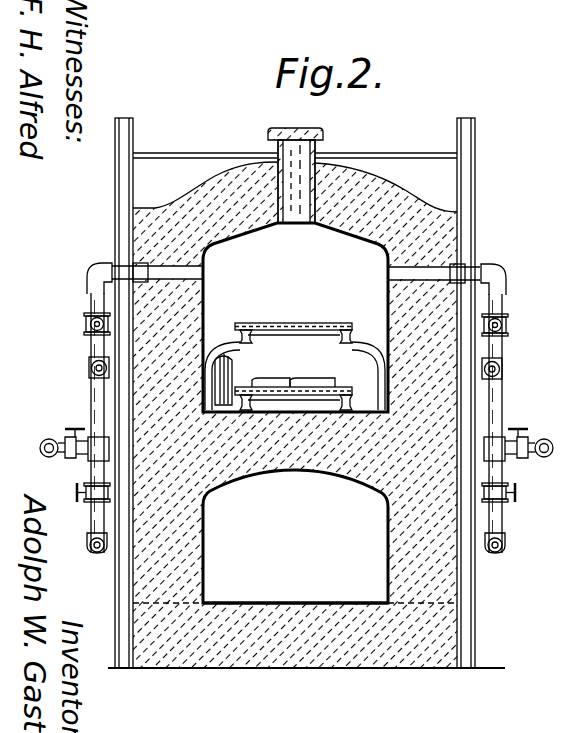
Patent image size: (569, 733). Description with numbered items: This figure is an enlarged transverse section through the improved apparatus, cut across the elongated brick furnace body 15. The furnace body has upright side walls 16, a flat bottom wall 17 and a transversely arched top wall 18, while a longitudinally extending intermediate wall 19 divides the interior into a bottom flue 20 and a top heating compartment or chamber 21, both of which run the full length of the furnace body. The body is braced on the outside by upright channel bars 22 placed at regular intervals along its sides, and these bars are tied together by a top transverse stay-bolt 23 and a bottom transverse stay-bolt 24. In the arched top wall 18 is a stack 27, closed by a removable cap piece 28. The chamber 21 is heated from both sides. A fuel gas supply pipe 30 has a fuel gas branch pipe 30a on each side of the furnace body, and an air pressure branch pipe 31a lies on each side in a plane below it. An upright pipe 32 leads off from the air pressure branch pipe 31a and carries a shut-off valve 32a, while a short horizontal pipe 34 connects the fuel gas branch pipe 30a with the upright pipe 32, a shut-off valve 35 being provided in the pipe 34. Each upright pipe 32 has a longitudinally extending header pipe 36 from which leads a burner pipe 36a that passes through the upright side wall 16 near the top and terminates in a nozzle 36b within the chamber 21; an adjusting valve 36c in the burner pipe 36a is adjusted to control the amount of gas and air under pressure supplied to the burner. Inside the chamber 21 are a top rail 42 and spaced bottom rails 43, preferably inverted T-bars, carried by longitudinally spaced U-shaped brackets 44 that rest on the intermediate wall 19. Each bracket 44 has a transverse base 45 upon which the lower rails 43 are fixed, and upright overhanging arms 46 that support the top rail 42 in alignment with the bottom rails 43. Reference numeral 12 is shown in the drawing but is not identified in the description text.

The charge material 12 is at (293, 363).
The furnace body 15 is at (184, 183).
The upright side walls 16 is at (148, 556).
The flat bottom wall 17 is at (340, 612).
The transversely arched top wall 18 is at (396, 190).
The intermediate wall 19 is at (346, 475).
The bottom flue 20 is at (295, 536).
The top heating compartment or chamber 21 is at (295, 317).
The upright channel bars 22 is at (123, 118).
The top transverse stay-bolt 23 is at (192, 154).
The bottom transverse stay-bolt 24 is at (228, 603).
The stack 27 is at (321, 141).
The removable cap piece 28 is at (270, 134).
The fuel gas supply pipe 30 is at (552, 441).
The fuel gas branch pipe 30a is at (63, 441).
The air pressure branch pipe 31a is at (90, 543).
The upright pipe 32 is at (92, 397).
The shut-off valve 32a is at (77, 493).
The short horizontal pipe 34 is at (56, 456).
The shut-off valve 35 is at (90, 437).
The header pipe 36 is at (89, 368).
The burner pipe 36a is at (90, 298).
The nozzle 36b is at (203, 273).
The adjusting valve 36c is at (84, 323).
The top rail 42 is at (241, 328).
The bottom rails 43 is at (228, 384).
The U-shaped bracket 44 is at (265, 412).
The transverse base 45 is at (287, 412).
The upright overhanging arms 46 is at (226, 367).